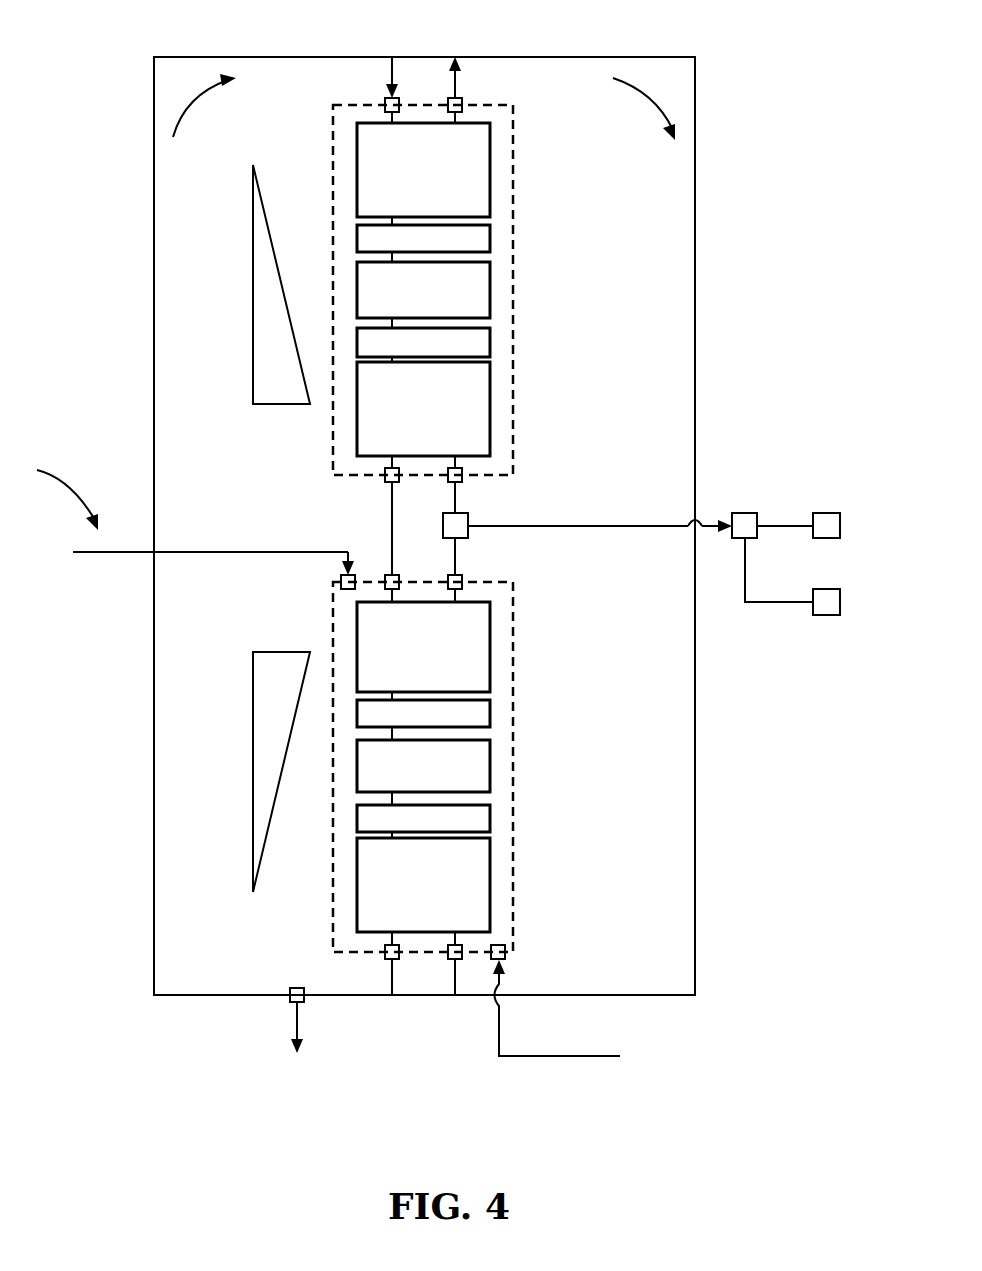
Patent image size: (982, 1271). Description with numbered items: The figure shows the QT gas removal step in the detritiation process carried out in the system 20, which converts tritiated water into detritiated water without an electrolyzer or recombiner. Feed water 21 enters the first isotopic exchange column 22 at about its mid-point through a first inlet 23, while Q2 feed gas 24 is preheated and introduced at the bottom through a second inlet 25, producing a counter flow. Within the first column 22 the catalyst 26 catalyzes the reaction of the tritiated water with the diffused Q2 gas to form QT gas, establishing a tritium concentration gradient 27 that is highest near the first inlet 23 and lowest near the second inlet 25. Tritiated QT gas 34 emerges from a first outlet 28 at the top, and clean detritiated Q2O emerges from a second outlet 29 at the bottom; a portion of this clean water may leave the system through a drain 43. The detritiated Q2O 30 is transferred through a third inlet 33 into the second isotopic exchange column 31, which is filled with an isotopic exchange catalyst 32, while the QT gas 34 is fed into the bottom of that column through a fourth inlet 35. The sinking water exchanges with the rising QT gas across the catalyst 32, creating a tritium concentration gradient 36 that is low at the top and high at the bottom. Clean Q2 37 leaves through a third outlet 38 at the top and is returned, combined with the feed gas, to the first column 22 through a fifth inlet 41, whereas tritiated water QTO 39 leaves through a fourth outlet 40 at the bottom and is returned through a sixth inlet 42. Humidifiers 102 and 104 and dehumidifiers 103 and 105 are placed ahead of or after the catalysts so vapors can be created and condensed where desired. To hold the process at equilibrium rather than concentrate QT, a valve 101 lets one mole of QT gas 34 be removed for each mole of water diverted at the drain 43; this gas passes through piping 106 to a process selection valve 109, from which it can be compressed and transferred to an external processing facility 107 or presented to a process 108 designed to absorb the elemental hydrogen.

The system 20 is at (737, 74).
The feed water 21 is at (76, 478).
The first isotopic exchange column 22 is at (515, 615).
The first inlet 23 is at (340, 580).
The Q2 feed gas 24 is at (537, 1060).
The second inlet 25 is at (507, 954).
The catalyst 26 is at (492, 767).
The tritium concentration gradient 27 is at (251, 736).
The first outlet 28 is at (466, 579).
The second outlet 29 is at (384, 956).
The detritiated Q2O 30 is at (135, 282).
The second isotopic exchange column 31 is at (515, 137).
The isotopic exchange catalyst 32 is at (492, 290).
The third inlet 33 is at (384, 98).
The QT gas 34 is at (453, 558).
The fourth inlet 35 is at (463, 478).
The tritium concentration gradient 36 is at (253, 320).
The clean Q2 37 is at (697, 238).
The third outlet 38 is at (461, 98).
The QTO 39 is at (392, 512).
The fourth outlet 40 is at (384, 480).
The fifth inlet 41 is at (450, 976).
The sixth inlet 42 is at (384, 574).
The drain 43 is at (290, 1030).
The valve 101 is at (468, 534).
The humidifier 102 is at (492, 240).
The dehumidifier 103 is at (495, 340).
The humidifier 104 is at (492, 714).
The dehumidifier 105 is at (492, 819).
The piping 106 is at (604, 520).
The external processing facility 107 is at (827, 512).
The process 108 is at (826, 616).
The process selection valve 109 is at (745, 512).